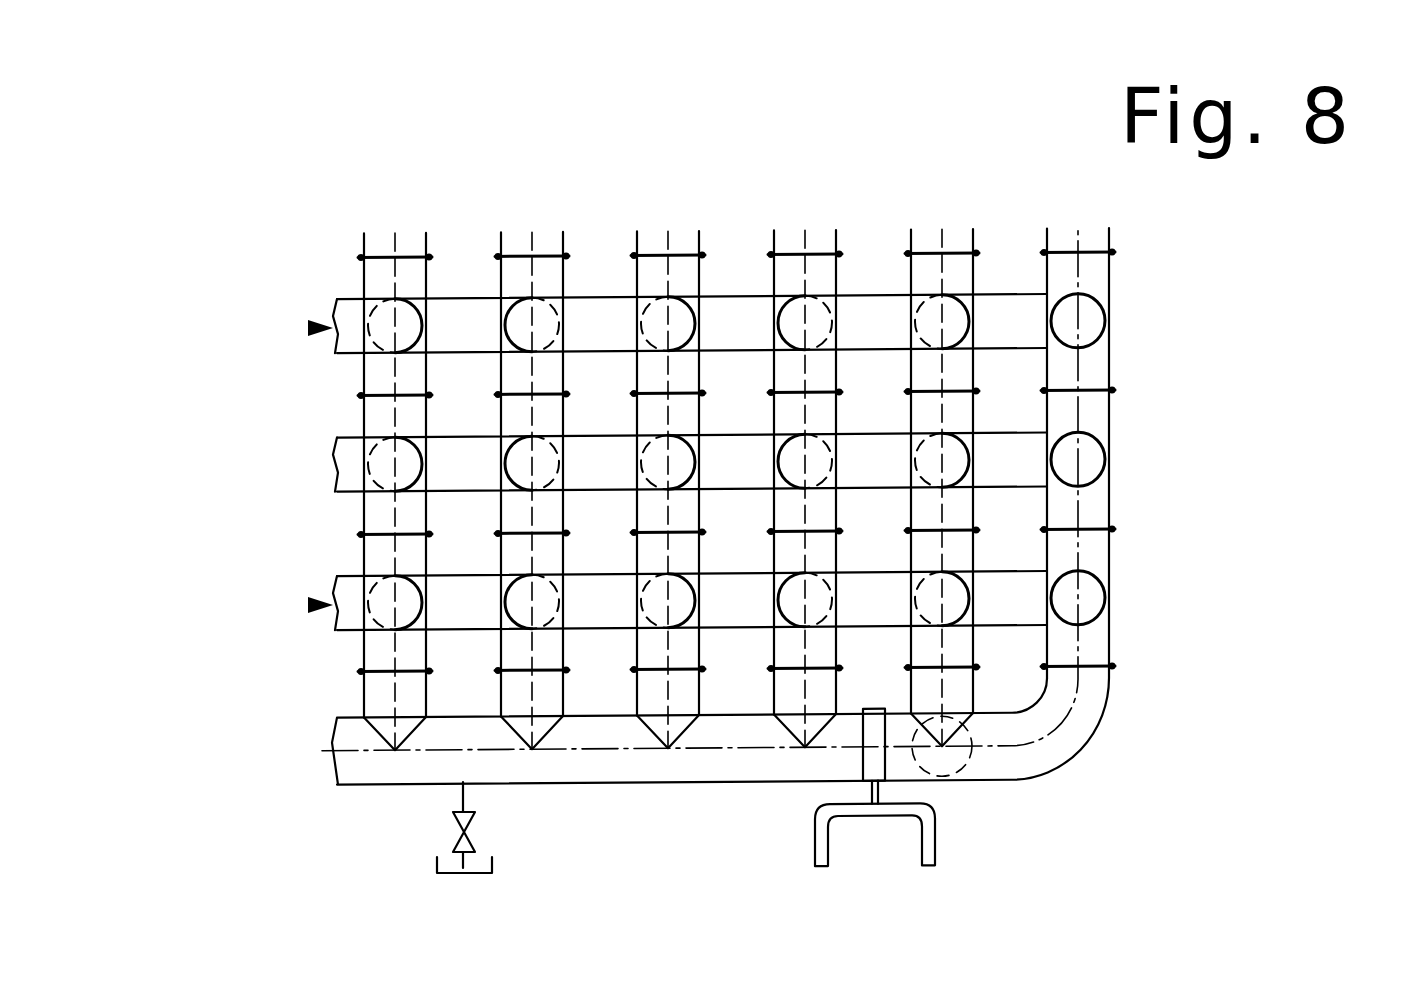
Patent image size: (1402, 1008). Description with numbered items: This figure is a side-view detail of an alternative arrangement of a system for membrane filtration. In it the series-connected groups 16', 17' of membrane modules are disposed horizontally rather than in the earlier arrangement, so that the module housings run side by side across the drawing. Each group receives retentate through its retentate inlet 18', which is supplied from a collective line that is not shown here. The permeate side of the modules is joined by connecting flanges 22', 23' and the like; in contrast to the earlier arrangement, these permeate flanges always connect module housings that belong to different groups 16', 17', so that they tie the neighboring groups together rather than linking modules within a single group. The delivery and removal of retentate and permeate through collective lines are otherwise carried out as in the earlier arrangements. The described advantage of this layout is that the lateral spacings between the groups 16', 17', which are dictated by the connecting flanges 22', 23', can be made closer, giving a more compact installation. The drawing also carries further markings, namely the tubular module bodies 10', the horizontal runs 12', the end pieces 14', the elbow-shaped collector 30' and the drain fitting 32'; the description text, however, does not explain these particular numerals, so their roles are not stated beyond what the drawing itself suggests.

The vertical tubes 10' is at (668, 421).
The horizontal tubes 12' is at (692, 361).
The tube end 14' is at (336, 361).
The series-connected group of membrane modules 16' is at (234, 556).
The series-connected group of membrane modules 17' is at (235, 278).
The retentate inlet 18' is at (823, 453).
The connecting flange 22' is at (1174, 479).
The connecting flange 23' is at (834, 462).
The collecting manifold with elbow 30' is at (794, 549).
The drain valve 32' is at (553, 844).